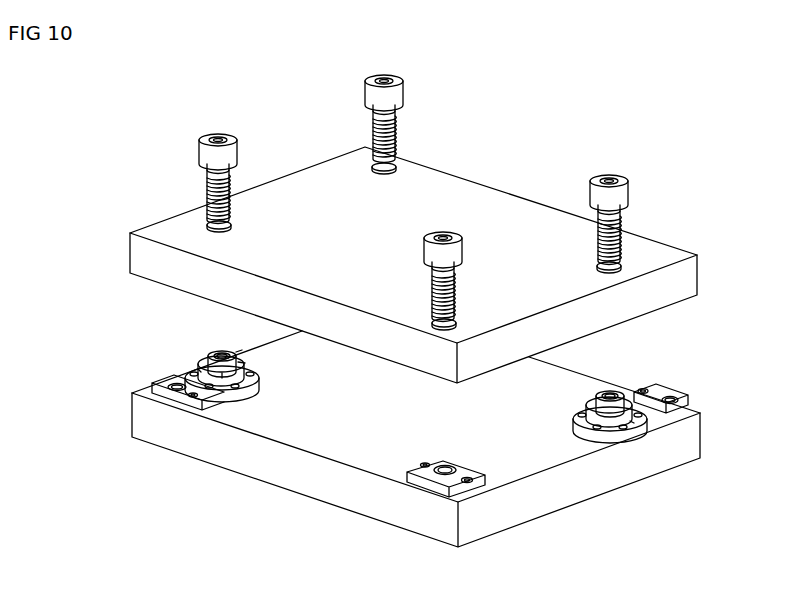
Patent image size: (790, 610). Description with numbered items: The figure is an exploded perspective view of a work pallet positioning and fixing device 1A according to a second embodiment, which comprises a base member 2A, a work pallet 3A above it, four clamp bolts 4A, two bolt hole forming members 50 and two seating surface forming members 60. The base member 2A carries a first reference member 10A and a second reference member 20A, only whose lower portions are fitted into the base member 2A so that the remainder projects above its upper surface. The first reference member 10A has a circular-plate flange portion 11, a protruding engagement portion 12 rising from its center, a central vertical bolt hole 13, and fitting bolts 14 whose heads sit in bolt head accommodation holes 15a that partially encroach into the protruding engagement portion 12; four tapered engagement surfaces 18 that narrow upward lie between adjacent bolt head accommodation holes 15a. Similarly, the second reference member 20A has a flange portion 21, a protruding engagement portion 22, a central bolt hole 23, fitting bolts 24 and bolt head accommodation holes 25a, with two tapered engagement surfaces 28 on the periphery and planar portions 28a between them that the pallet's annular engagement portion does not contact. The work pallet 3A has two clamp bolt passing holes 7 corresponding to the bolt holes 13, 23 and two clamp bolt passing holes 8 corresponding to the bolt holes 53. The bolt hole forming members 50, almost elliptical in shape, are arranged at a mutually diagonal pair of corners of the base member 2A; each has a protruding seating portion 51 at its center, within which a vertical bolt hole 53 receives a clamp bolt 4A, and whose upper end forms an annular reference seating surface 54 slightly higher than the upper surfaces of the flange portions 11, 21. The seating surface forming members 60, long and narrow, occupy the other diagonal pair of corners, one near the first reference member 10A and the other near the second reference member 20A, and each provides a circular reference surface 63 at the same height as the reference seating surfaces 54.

The positioning and fixing device 1A is at (582, 107).
The base member 2A is at (297, 490).
The work pallet 3A is at (462, 173).
The clamp bolt 4A is at (238, 144).
The clamp bolt passing hole 7 is at (226, 228).
The clamp bolt passing hole 8 is at (384, 172).
The first reference member 10A is at (232, 379).
The flange portion 11 is at (254, 371).
The protruding engagement portion 12 is at (234, 352).
The bolt hole 13 is at (217, 352).
The fitting bolt 14 is at (261, 385).
The bolt head accommodation hole 15a is at (246, 363).
The tapered engagement surface 18 is at (197, 369).
The second reference member 20A is at (624, 426).
The flange portion 21 is at (582, 403).
The protruding engagement portion 22 is at (600, 393).
The bolt hole 23 is at (621, 393).
The fitting bolt 24 is at (642, 424).
The bolt head accommodation hole 25a is at (591, 433).
The tapered engagement surface 28 is at (681, 378).
The planar portion 28a is at (649, 391).
The bolt hole forming member 50 is at (457, 489).
The protruding seating portion 51 is at (450, 487).
The bolt hole 53 is at (450, 467).
The reference seating surface 54 is at (427, 463).
The seating surface forming member 60 is at (156, 428).
The reference surface 63 is at (175, 390).